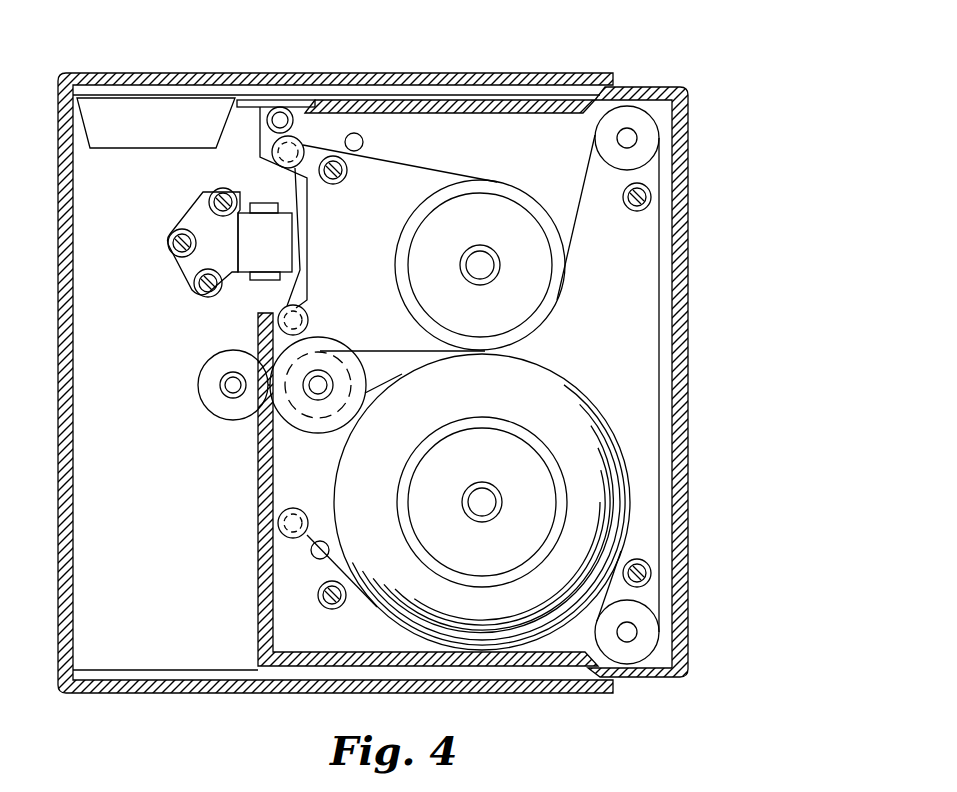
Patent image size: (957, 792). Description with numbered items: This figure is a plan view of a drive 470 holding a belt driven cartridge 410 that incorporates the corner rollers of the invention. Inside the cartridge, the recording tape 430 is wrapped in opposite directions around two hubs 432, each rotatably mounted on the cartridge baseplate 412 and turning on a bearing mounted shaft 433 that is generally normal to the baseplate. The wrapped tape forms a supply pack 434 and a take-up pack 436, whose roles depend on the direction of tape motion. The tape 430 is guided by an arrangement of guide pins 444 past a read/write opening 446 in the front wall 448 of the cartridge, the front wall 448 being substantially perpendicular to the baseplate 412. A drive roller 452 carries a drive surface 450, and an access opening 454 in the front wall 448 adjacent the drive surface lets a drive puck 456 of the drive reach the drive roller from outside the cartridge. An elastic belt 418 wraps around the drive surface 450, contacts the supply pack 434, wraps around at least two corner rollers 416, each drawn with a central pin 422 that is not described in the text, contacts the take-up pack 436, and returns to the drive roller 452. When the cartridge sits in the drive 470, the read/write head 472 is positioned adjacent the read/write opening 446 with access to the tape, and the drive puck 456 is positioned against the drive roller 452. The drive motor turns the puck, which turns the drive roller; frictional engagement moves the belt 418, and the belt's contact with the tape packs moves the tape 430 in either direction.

The belt driven cartridge 410 is at (686, 87).
The cartridge baseplate 412 is at (624, 362).
The corner rollers 416 is at (650, 139).
The elastic belt 418 is at (577, 223).
The roller pin 422 is at (627, 135).
The recording tape 430 is at (428, 170).
The hubs 432 is at (505, 227).
The bearing mounted shaft 433 is at (480, 268).
The supply pack 434 is at (504, 402).
The take-up pack 436 is at (557, 295).
The guide pins 444 is at (273, 155).
The read/write opening 446 is at (270, 300).
The front wall 448 is at (262, 627).
The drive surface 450 is at (322, 343).
The drive roller 452 is at (370, 372).
The access opening 454 is at (262, 418).
The drive puck 456 is at (214, 386).
The drive 470 is at (166, 74).
The read/write head 472 is at (284, 243).